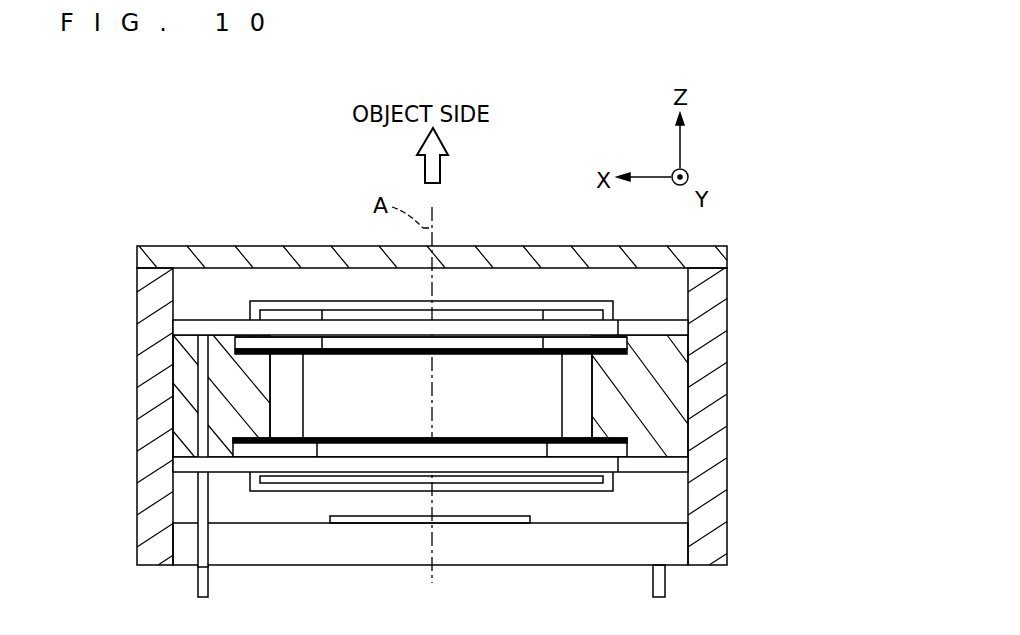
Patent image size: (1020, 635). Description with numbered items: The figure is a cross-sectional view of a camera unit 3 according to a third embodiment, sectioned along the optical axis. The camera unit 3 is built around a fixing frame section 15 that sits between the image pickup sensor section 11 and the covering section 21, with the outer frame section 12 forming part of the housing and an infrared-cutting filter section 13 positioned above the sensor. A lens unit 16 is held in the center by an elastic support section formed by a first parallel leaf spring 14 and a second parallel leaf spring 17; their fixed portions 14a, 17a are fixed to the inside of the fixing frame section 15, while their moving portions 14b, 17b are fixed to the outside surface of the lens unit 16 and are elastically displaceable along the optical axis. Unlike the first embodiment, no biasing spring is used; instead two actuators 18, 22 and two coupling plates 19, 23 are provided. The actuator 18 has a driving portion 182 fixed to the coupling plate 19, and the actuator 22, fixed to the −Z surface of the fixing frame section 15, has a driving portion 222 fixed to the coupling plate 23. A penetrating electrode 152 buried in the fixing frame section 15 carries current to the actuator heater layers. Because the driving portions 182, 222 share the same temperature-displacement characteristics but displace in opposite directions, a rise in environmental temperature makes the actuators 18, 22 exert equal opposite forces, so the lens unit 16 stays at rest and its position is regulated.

The camera unit 3 is at (430, 384).
The image pickup sensor section 11 is at (557, 552).
The outer frame section 12 is at (163, 473).
The infrared-cutting filter section 13 is at (470, 527).
The first parallel leaf spring 14 is at (520, 470).
The fixed portion 14a is at (612, 448).
The moving portion 14b is at (460, 437).
The fixing frame section 15 is at (677, 407).
The penetrating electrode 152 is at (203, 372).
The lens unit 16 is at (340, 410).
The second parallel leaf spring 17 is at (521, 344).
The fixed portion 17a is at (610, 348).
The moving portion 17b is at (405, 355).
The actuator 18 is at (430, 303).
The driving portion 182 is at (483, 326).
The coupling plate 19 is at (292, 301).
The covering section 21 is at (220, 260).
The actuator 22 is at (459, 494).
The driving portion 222 is at (495, 465).
The coupling plate 23 is at (305, 483).